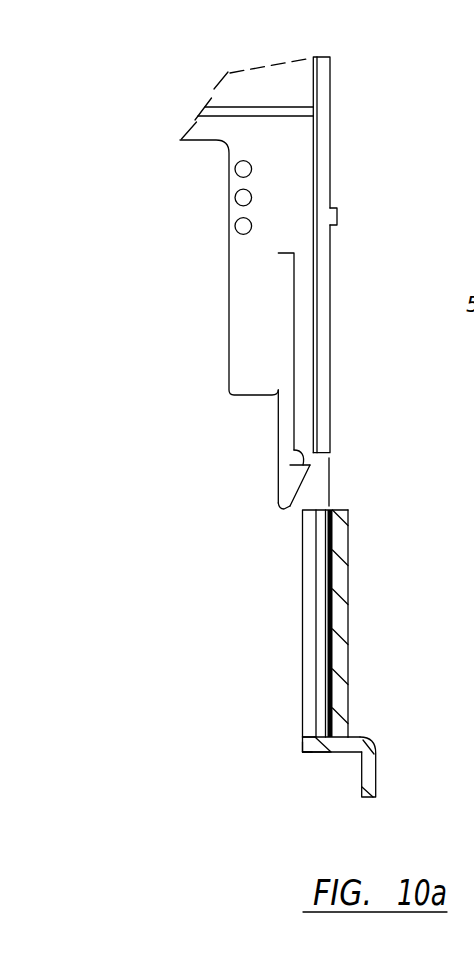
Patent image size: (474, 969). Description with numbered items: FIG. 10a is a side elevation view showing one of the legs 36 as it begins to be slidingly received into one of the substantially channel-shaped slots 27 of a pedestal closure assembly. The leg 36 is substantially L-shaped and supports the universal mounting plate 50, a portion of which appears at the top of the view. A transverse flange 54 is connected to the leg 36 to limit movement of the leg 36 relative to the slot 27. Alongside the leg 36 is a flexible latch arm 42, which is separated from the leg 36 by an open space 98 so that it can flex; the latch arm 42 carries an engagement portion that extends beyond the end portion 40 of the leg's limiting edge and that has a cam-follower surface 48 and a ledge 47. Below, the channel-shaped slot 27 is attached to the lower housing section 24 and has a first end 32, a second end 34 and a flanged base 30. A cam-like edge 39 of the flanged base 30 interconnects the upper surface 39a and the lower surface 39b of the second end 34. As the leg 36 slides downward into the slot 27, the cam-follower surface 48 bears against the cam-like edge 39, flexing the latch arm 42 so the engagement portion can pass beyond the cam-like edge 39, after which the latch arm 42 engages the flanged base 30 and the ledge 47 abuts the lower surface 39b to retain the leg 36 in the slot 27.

The universal mounting plate 50 is at (215, 73).
The leg 36 is at (344, 383).
The transverse flange 54 is at (337, 217).
The flexible latch arm 42 is at (267, 414).
The open space 98 is at (302, 418).
The ledge 47 is at (293, 451).
The cam-follower surface 48 is at (300, 490).
The end portion 40 is at (320, 458).
The channel-shaped slot 27 is at (291, 612).
The first end 32 is at (349, 511).
The second end 34 is at (340, 729).
The cam-like edge 39 is at (302, 747).
The upper surface 39a is at (312, 737).
The lower surface 39b is at (318, 753).
The flanged base 30 is at (293, 756).
The lower housing section 24 is at (404, 735).